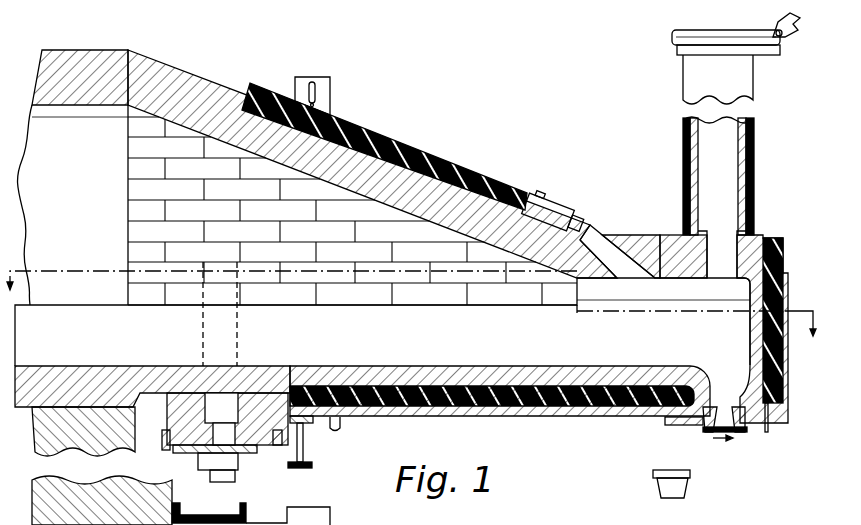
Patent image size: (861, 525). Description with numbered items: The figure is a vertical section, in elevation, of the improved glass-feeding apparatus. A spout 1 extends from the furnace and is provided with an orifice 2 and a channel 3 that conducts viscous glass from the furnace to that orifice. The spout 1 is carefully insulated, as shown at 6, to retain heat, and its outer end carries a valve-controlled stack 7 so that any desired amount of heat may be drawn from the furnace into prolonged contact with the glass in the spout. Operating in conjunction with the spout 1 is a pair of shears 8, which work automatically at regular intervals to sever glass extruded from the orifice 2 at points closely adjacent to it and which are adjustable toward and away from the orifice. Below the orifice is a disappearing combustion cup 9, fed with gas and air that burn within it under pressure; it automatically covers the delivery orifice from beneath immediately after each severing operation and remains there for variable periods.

The spout 1 is at (138, 147).
The orifice 2 is at (729, 396).
The channel 3 is at (398, 342).
The insulation 6 is at (438, 160).
The valve-controlled stack 7 is at (707, 76).
The shears 8 is at (733, 439).
The disappearing combustion cup 9 is at (672, 487).